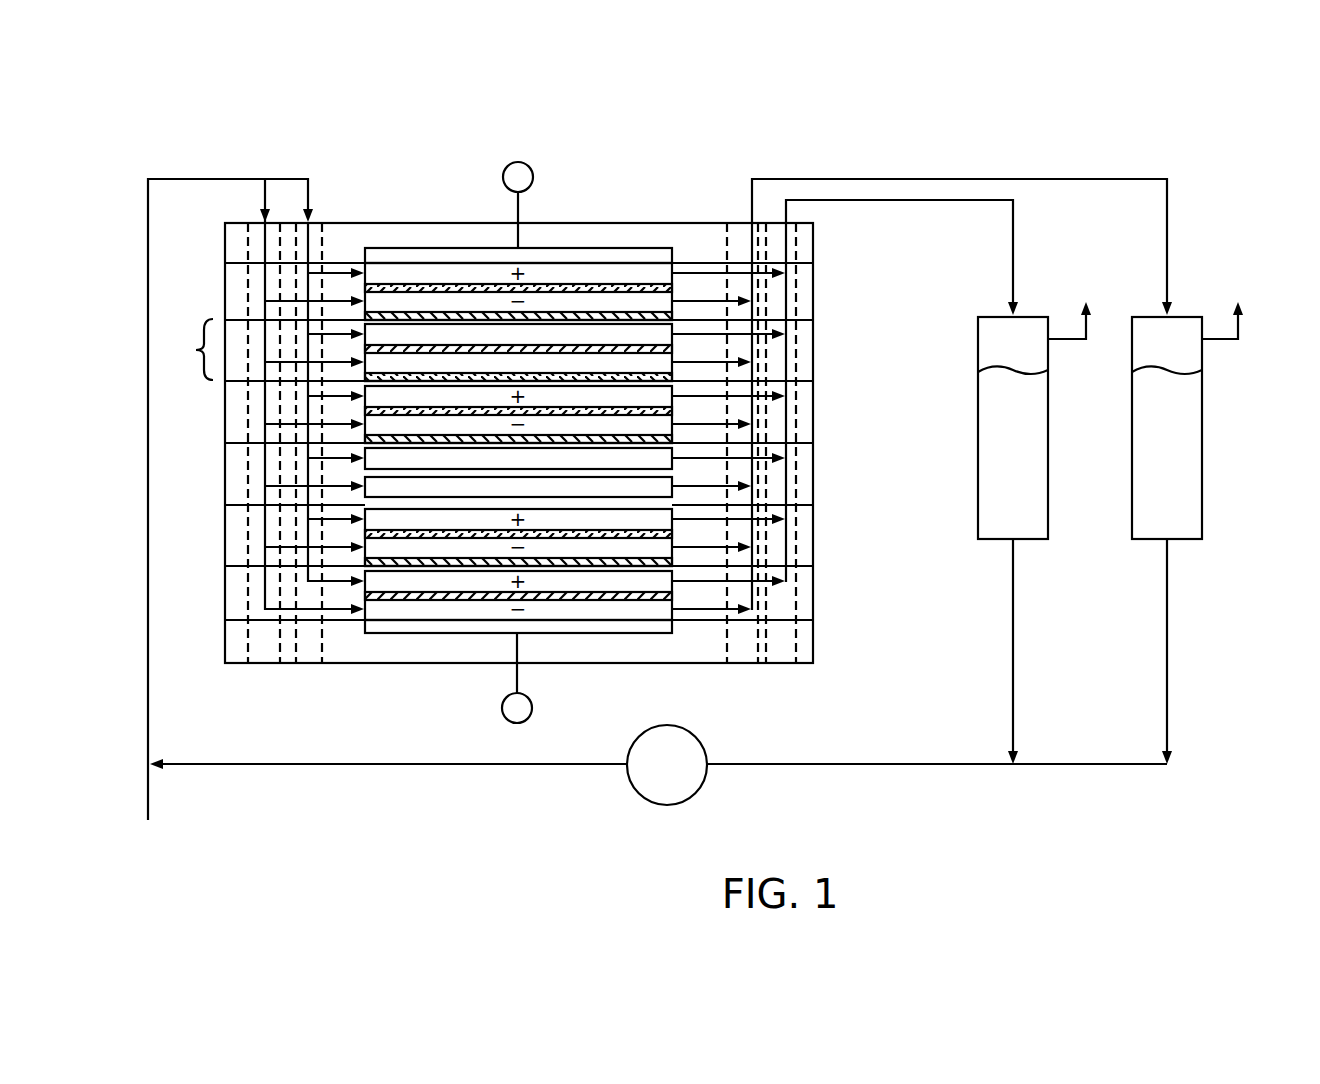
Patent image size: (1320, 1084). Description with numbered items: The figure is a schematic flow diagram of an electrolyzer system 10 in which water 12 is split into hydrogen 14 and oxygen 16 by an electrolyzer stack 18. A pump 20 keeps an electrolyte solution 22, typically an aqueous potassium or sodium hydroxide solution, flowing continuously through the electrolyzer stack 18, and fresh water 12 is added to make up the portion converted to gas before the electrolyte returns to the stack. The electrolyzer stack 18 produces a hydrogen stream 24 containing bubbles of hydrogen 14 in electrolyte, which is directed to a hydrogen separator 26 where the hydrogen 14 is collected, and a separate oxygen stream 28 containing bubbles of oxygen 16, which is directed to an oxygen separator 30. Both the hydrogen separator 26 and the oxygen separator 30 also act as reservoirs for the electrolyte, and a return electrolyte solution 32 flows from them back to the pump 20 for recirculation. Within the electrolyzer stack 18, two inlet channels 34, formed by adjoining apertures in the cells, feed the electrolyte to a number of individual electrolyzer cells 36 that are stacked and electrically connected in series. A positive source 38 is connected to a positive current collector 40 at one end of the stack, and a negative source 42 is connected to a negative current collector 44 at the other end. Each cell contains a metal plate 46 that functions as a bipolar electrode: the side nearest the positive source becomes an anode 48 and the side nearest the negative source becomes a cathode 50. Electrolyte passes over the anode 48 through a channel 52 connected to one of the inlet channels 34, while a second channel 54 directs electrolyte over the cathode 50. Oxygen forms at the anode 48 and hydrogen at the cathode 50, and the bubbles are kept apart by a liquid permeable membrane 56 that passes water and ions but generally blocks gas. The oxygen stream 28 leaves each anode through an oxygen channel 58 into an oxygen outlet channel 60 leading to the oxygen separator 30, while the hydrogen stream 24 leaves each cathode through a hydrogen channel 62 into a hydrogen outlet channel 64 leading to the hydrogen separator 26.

The electrolyzer system 10 is at (232, 120).
The water 12 is at (176, 865).
The hydrogen 14 is at (1243, 263).
The oxygen 16 is at (1090, 263).
The electrolyzer stack 18 is at (382, 223).
The pump 20 is at (690, 733).
The electrolyte solution 22 is at (198, 178).
The hydrogen stream 24 is at (862, 178).
The hydrogen separator 26 is at (1202, 428).
The oxygen stream 28 is at (927, 202).
The oxygen separator 30 is at (978, 428).
The return electrolyte solution 32 is at (877, 760).
The inlet channels 34 is at (313, 233).
The electrolyzer cells 36 is at (417, 350).
The positive source 38 is at (520, 208).
The positive current collector 40 is at (622, 257).
The negative source 42 is at (518, 678).
The negative current collector 44 is at (433, 630).
The metal plate 46 is at (652, 348).
The anode 48 is at (652, 458).
The cathode 50 is at (650, 488).
The channel 52 is at (337, 333).
The second channel 54 is at (273, 367).
The liquid permeable membrane 56 is at (655, 378).
The oxygen channel 58 is at (753, 333).
The oxygen outlet channel 60 is at (777, 227).
The hydrogen channel 62 is at (708, 363).
The hydrogen outlet channel 64 is at (737, 225).